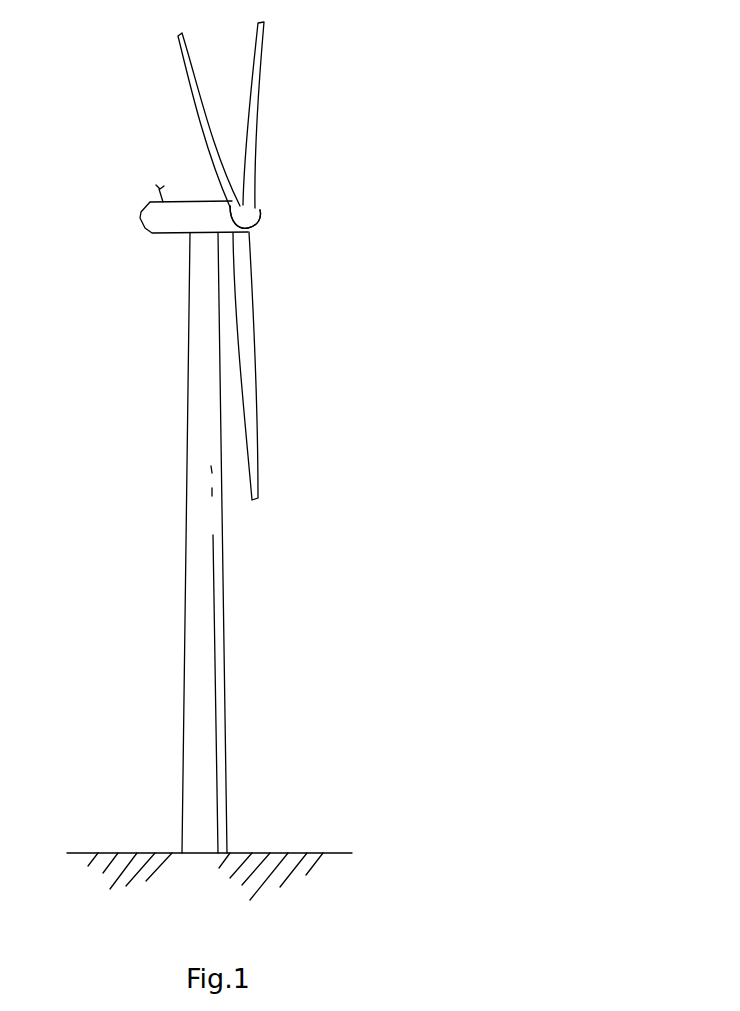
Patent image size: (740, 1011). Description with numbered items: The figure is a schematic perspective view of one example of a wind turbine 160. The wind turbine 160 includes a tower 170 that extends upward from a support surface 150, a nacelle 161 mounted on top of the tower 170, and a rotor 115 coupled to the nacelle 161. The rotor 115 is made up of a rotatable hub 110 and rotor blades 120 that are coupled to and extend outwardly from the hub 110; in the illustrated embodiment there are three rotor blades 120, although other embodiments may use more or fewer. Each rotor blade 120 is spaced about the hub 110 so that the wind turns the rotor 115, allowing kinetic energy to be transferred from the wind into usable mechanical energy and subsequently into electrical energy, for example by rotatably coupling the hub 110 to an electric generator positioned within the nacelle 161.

The hub 110 is at (262, 220).
The rotor 115 is at (271, 192).
The rotor blade 120 is at (258, 52).
The support surface 150 is at (128, 852).
The wind turbine 160 is at (347, 82).
The nacelle 161 is at (169, 238).
The tower 170 is at (193, 630).